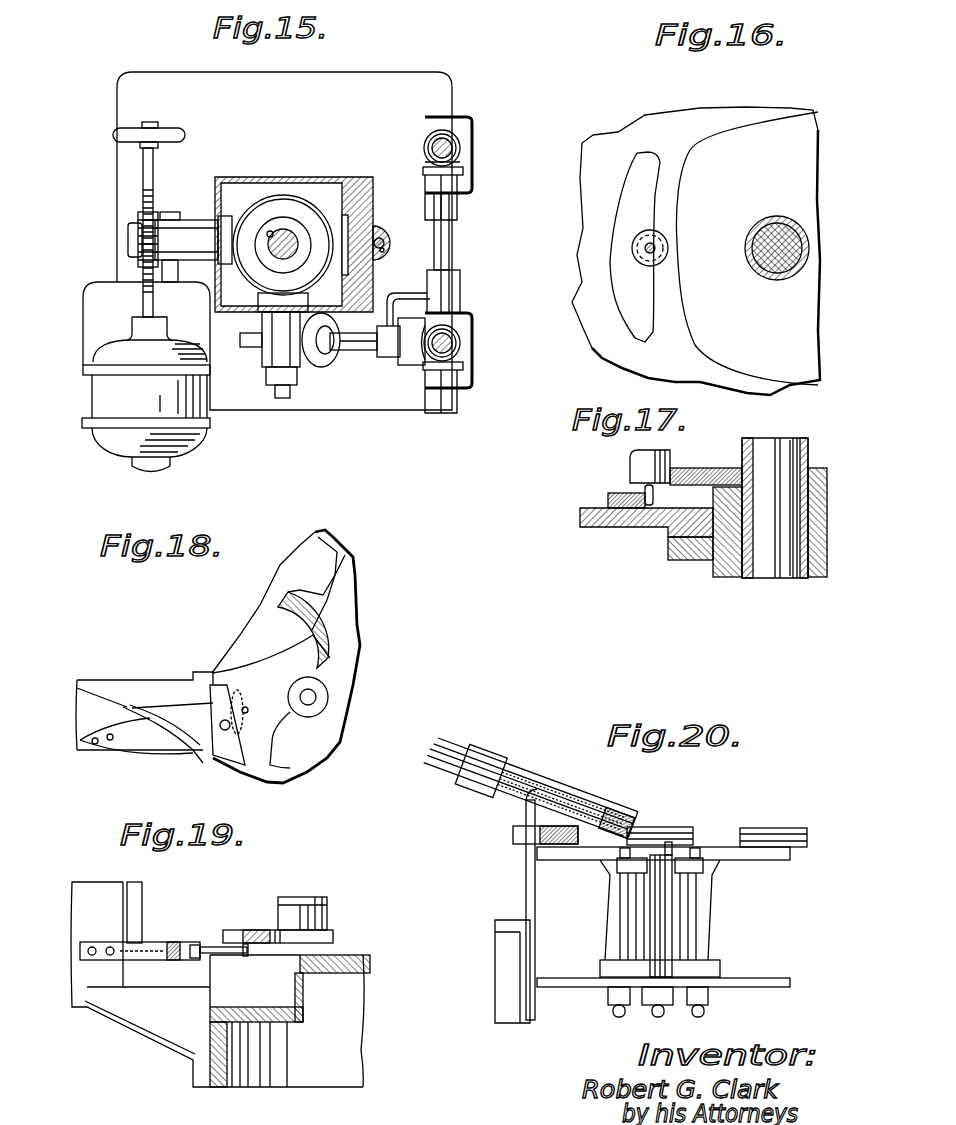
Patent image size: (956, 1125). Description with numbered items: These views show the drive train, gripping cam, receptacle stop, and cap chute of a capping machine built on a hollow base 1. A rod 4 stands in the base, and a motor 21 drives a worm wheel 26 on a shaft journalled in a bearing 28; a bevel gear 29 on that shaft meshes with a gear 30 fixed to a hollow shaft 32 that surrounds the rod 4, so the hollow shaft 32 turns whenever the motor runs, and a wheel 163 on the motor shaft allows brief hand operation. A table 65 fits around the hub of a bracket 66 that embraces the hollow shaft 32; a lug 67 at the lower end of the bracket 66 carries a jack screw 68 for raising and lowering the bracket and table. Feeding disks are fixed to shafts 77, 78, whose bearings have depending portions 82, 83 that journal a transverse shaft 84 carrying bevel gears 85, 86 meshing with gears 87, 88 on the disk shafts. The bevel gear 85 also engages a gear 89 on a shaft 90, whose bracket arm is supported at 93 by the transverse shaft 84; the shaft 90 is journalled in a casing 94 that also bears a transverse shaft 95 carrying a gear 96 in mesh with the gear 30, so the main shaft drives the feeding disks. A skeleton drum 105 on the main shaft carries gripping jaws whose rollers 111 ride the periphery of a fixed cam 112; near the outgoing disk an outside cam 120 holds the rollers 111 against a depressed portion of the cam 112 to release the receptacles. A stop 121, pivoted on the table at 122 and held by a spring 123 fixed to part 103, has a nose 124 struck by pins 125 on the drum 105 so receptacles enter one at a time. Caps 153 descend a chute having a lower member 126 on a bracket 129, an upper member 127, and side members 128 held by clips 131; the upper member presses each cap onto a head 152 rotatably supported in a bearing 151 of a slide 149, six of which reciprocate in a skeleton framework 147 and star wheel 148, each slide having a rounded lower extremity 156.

In FIG. 15, the hollow base 1 is at (310, 178).
In FIG. 15, the rod 4 is at (283, 259).
In FIG. 16, the rod 4 is at (780, 225).
In FIG. 17, the rod 4 is at (788, 438).
In FIG. 15, the motor 21 is at (146, 394).
In FIG. 15, the worm wheel 26 is at (143, 206).
In FIG. 15, the bearing 28 is at (186, 220).
In FIG. 15, the bevel gear 29 is at (231, 222).
In FIG. 15, the gear 30 is at (283, 195).
In FIG. 15, the hollow shaft 32 is at (283, 229).
In FIG. 16, the hollow shaft 32 is at (785, 277).
In FIG. 17, the hollow shaft 32 is at (797, 580).
In FIG. 16, the table 65 is at (696, 251).
In FIG. 17, the table 65 is at (615, 527).
In FIG. 18, the table 65 is at (358, 605).
In FIG. 19, the table 65 is at (290, 1021).
In FIG. 15, the bracket 66 is at (374, 228).
In FIG. 17, the bracket 66 is at (715, 555).
In FIG. 15, the lug 67 is at (386, 252).
In FIG. 15, the jack screw 68 is at (385, 243).
In FIG. 15, the shaft 77 is at (460, 344).
In FIG. 15, the shaft 78 is at (458, 144).
In FIG. 15, the depending portion 82 is at (472, 384).
In FIG. 15, the depending portion 83 is at (472, 190).
In FIG. 15, the transverse shaft 84 is at (449, 242).
In FIG. 15, the bevel gear 85 is at (463, 366).
In FIG. 15, the bevel gear 86 is at (463, 172).
In FIG. 15, the gear 87 is at (460, 335).
In FIG. 15, the gear 88 is at (460, 156).
In FIG. 15, the gear 89 is at (408, 362).
In FIG. 15, the shaft 90 is at (352, 350).
In FIG. 15, the support 93 is at (460, 297).
In FIG. 15, the casing 94 is at (262, 325).
In FIG. 15, the transverse shaft 95 is at (283, 398).
In FIG. 15, the gear 96 is at (258, 296).
In FIG. 18, the part 103 is at (95, 695).
In FIG. 19, the part 103 is at (85, 887).
In FIG. 18, the skeleton drum 105 is at (315, 572).
In FIG. 19, the skeleton drum 105 is at (333, 935).
In FIG. 16, the roller 111 is at (663, 240).
In FIG. 17, the roller 111 is at (630, 470).
In FIG. 16, the cam 112 is at (747, 248).
In FIG. 17, the cam 112 is at (705, 468).
In FIG. 16, the outside cam 120 is at (635, 247).
In FIG. 17, the outside cam 120 is at (608, 499).
In FIG. 18, the stop 121 is at (163, 708).
In FIG. 19, the stop 121 is at (142, 898).
In FIG. 18, the pivot 122 is at (225, 732).
In FIG. 19, the pivot 122 is at (222, 947).
In FIG. 18, the spring 123 is at (145, 715).
In FIG. 19, the spring 123 is at (162, 960).
In FIG. 18, the nose 124 is at (239, 690).
In FIG. 18, the pin 125 is at (248, 711).
In FIG. 19, the pin 125 is at (248, 953).
In FIG. 20, the lower member 126 is at (525, 803).
In FIG. 20, the upper member 127 is at (472, 745).
In FIG. 20, the side member 128 is at (465, 760).
In FIG. 20, the bracket 129 is at (495, 971).
In FIG. 20, the clip 131 is at (494, 756).
In FIG. 20, the skeleton framework 147 is at (700, 873).
In FIG. 20, the star wheel 148 is at (760, 987).
In FIG. 20, the slide 149 is at (712, 920).
In FIG. 20, the bearing 151 is at (790, 855).
In FIG. 20, the head 152 is at (513, 836).
In FIG. 20, the cap 153 is at (612, 818).
In FIG. 20, the rounded extremity 156 is at (692, 1016).
In FIG. 15, the wheel 163 is at (172, 130).